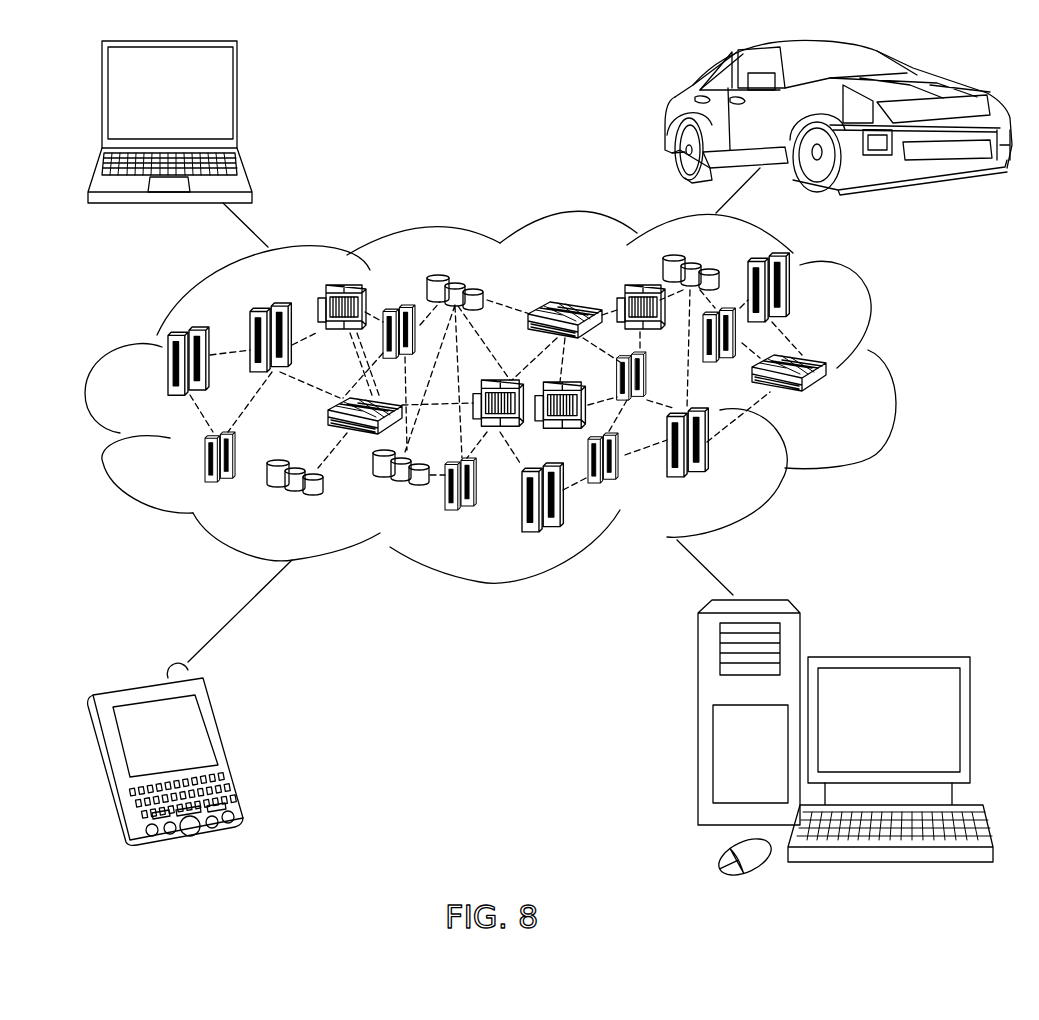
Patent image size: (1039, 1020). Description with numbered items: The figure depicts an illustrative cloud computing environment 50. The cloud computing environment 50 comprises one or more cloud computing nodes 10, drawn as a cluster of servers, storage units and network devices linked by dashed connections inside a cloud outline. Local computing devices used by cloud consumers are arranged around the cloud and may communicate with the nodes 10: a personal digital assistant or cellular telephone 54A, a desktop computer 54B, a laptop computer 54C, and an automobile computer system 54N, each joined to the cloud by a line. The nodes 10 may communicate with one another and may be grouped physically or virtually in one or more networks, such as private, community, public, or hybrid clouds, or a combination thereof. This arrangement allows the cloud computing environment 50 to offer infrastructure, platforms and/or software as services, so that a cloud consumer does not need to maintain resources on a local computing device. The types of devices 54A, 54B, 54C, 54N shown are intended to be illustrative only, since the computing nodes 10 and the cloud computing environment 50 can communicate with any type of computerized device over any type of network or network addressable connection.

The cloud computing node 10 is at (836, 405).
The cloud computing environment 50 is at (888, 370).
The personal digital assistant or cellular telephone 54A is at (227, 745).
The desktop computer 54B is at (887, 655).
The laptop computer 54C is at (237, 100).
The automobile computer system 54N is at (670, 118).